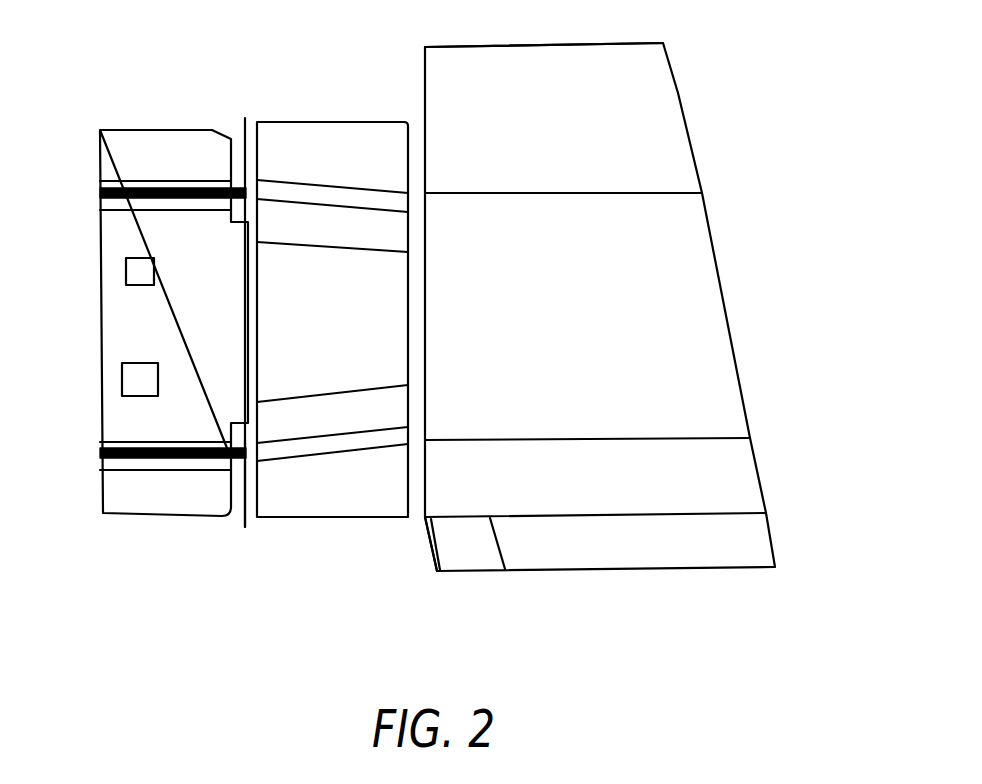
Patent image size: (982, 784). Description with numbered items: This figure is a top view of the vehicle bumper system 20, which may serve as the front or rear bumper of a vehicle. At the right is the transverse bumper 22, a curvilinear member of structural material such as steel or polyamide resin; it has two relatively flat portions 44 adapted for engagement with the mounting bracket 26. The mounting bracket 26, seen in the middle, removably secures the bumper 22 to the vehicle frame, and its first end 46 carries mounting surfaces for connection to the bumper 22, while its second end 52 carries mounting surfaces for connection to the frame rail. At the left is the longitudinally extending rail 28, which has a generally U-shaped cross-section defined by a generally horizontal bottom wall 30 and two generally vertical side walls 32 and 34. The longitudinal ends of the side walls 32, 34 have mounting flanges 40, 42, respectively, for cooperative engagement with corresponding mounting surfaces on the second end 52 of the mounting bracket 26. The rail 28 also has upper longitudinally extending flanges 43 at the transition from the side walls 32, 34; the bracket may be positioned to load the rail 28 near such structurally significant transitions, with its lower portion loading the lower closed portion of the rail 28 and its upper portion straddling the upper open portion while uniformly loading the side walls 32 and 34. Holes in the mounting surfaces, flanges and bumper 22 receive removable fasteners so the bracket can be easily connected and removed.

The vehicle bumper system 20 is at (808, 150).
The transverse bumper 22 is at (692, 348).
The mounting bracket 26 is at (330, 538).
The longitudinally extending rail 28 is at (128, 532).
The bottom wall 30 is at (118, 325).
The side wall 32 is at (117, 210).
The side wall 34 is at (117, 440).
The mounting flange 40 is at (247, 153).
The mounting flange 42 is at (253, 500).
The upper longitudinally extending flange 43 is at (153, 153).
The flat portion 44 is at (435, 98).
The first end 46 is at (412, 345).
The second end 52 is at (254, 298).